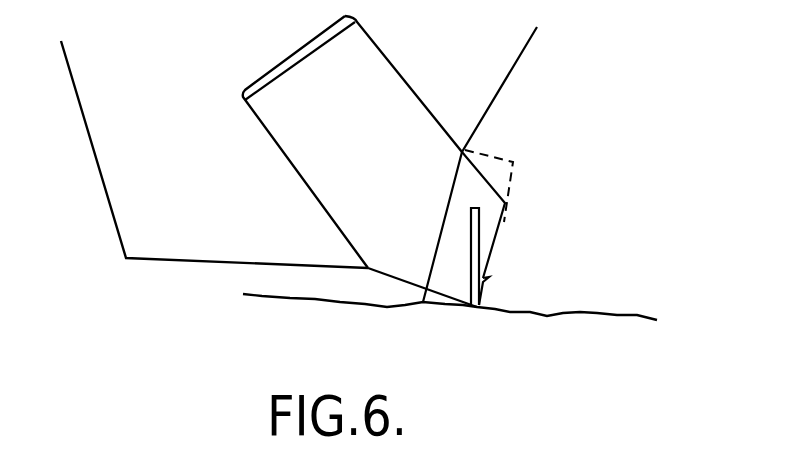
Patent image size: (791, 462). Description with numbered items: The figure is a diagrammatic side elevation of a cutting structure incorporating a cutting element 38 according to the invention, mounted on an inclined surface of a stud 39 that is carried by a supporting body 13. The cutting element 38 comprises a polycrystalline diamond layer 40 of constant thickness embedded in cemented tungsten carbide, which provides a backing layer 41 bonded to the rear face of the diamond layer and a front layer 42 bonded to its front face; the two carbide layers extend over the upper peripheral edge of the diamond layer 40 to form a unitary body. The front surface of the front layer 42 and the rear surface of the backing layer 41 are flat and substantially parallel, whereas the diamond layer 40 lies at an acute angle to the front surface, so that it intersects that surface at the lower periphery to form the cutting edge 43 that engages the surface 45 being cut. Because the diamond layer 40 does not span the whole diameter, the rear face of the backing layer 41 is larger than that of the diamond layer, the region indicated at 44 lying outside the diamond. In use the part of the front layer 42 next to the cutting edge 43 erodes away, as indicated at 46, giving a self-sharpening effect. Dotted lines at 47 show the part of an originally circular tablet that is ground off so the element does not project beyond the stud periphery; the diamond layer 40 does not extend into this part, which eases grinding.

The tool holder 13 is at (127, 162).
The cutting insert 39 is at (368, 112).
The part of the circular tablet to be ground off 47 is at (497, 157).
The cutting element 38 is at (507, 176).
The front layer 42 is at (482, 233).
The polycrystalline diamond layer 40 is at (480, 253).
The rake face 44 is at (493, 261).
The eroded part of the front layer 46 is at (484, 285).
The workpiece surface 45 is at (633, 308).
The cutting edge 43 is at (478, 310).
The backing layer 41 is at (447, 277).